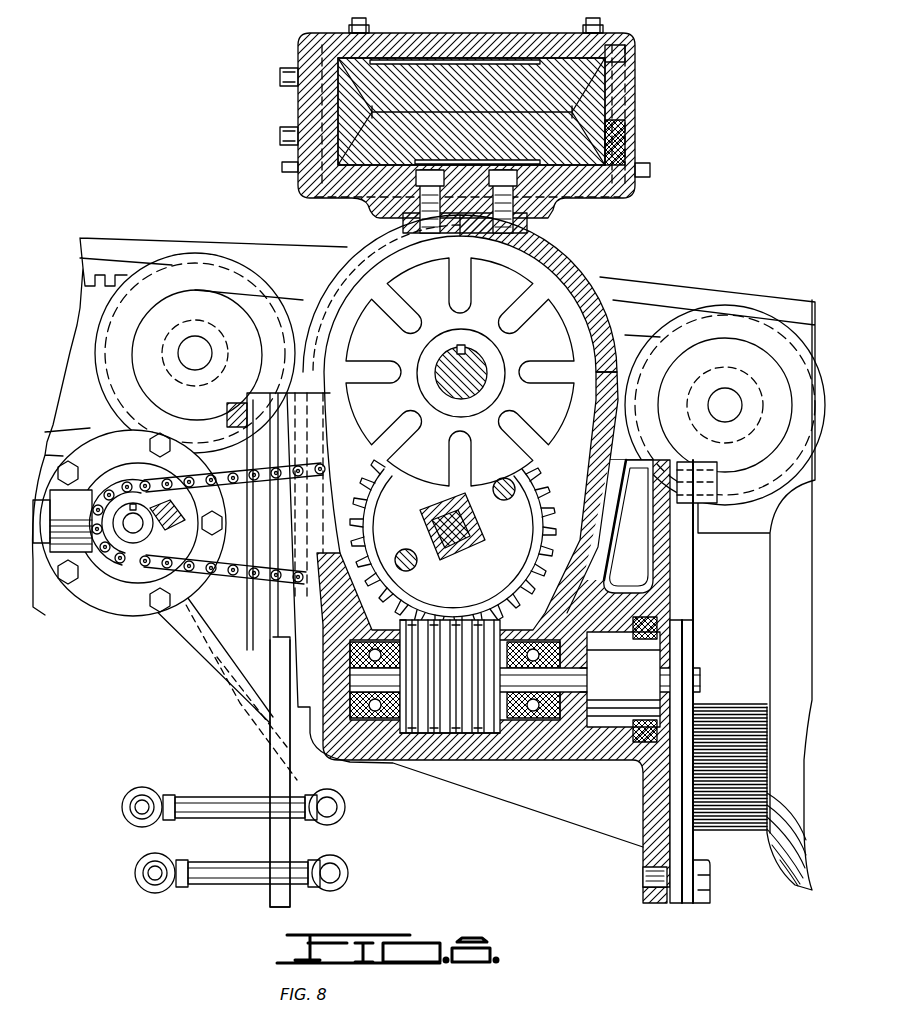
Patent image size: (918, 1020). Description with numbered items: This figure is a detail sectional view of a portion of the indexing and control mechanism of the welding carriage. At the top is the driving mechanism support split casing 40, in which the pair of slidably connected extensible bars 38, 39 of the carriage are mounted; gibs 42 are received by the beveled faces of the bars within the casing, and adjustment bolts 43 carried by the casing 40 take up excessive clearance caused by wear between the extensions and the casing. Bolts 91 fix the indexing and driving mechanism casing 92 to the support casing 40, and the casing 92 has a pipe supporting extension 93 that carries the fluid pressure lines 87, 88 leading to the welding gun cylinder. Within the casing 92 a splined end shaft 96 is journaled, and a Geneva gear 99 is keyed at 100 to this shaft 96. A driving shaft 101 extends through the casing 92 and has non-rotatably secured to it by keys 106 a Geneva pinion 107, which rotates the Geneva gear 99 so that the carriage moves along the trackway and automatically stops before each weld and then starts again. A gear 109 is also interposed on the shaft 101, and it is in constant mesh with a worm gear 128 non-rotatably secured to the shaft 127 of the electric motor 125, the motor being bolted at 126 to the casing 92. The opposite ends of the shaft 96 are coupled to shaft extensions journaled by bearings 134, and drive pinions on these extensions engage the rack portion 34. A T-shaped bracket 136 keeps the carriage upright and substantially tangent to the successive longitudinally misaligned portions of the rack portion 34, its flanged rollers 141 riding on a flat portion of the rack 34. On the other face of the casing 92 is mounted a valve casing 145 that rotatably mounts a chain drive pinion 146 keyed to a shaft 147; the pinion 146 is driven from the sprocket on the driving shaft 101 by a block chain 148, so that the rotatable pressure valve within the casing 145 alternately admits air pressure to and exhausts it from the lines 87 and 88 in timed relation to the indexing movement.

The rack portion 34 is at (112, 250).
The extensible bar 38 is at (598, 48).
The extensible bar 39 is at (625, 150).
The driving mechanism support split casing 40 is at (460, 40).
The gibs 42 is at (355, 125).
The adjustment bolts 43 is at (280, 76).
The fluid pressure line 87 is at (122, 808).
The fluid pressure line 88 is at (135, 873).
The bolts 91 is at (518, 180).
The indexing and driving mechanism casing 92 is at (583, 263).
The pipe supporting extension 93 is at (272, 900).
The splined end shaft 96 is at (470, 368).
The Geneva gear 99 is at (528, 318).
The key 100 is at (454, 348).
The driving shaft 101 is at (490, 516).
The keys 106 is at (440, 512).
The Geneva pinion 107 is at (520, 543).
The gear 109 is at (522, 484).
The electric motor 125 is at (770, 875).
The bolts 126 is at (688, 905).
The motor shaft 127 is at (572, 712).
The worm gear 128 is at (470, 735).
The bearings 134 is at (80, 590).
The T-shaped bracket 136 is at (627, 333).
The flanged rollers 141 is at (198, 256).
The valve casing 145 is at (127, 610).
The chain drive pinion 146 is at (175, 498).
The shaft 147 is at (145, 527).
The block chain 148 is at (125, 545).